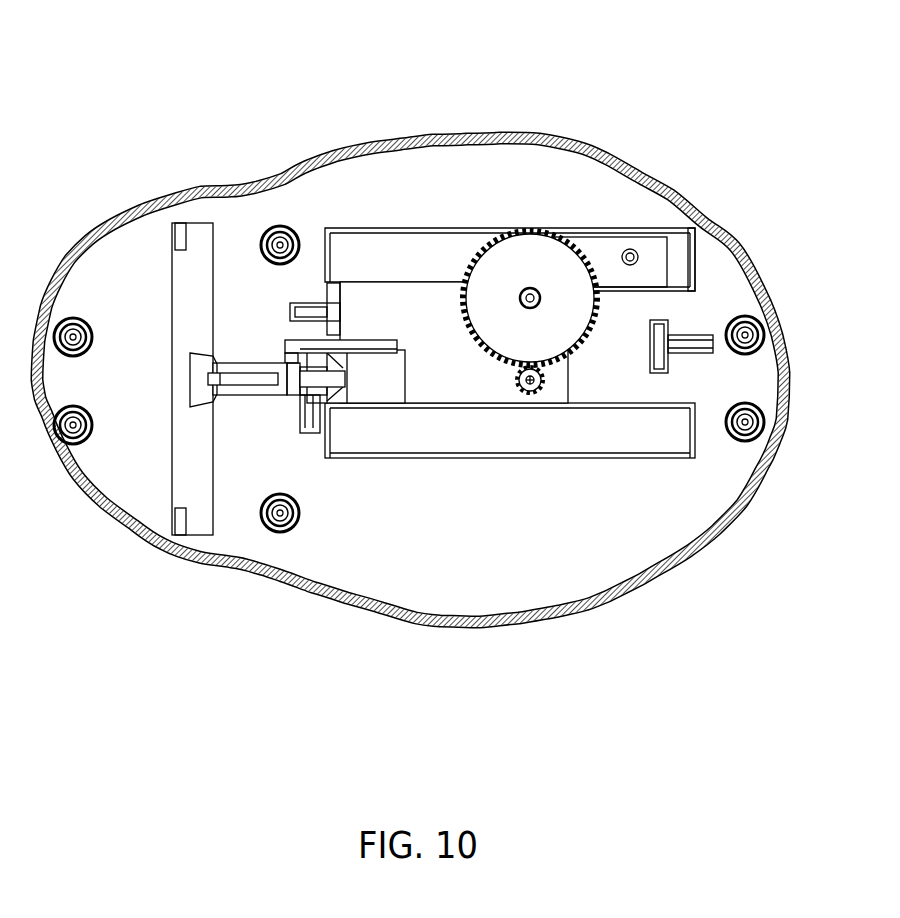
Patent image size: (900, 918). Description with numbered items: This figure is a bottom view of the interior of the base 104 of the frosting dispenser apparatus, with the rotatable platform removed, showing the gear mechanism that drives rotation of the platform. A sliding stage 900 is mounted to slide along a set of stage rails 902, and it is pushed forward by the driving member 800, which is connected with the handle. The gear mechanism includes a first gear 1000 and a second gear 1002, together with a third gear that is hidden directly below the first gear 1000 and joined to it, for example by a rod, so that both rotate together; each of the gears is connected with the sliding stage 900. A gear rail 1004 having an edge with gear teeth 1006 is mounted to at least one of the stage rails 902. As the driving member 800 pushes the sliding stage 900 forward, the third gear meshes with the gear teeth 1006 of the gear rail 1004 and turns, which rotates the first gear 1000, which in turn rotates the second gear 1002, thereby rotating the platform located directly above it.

The base 104 is at (415, 625).
The driving member 800 is at (248, 376).
The sliding stage 900 is at (435, 298).
The stage rails 902 is at (387, 263).
The first gear 1000 is at (593, 323).
The second gear 1002 is at (540, 388).
The gear rail 1004 is at (604, 250).
The gear teeth 1006 is at (652, 282).